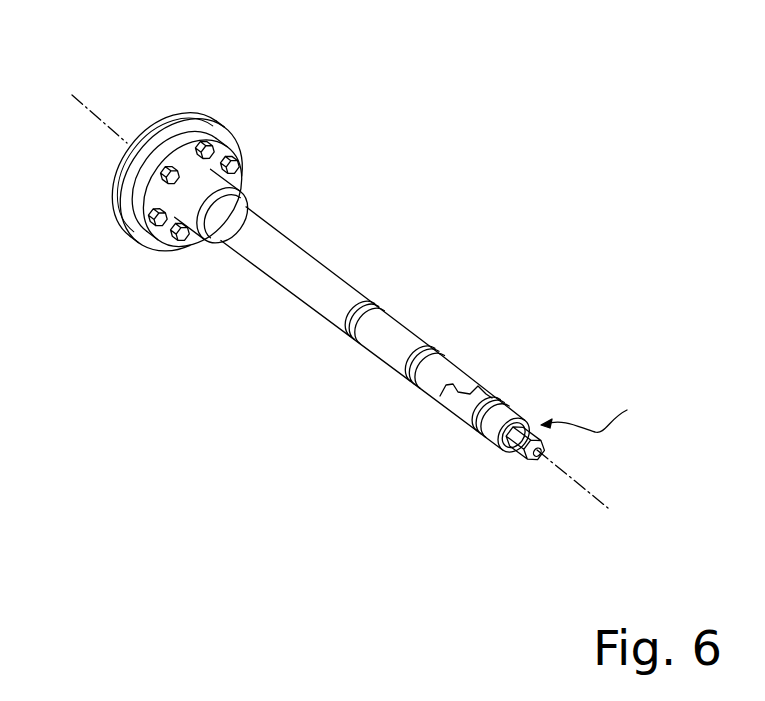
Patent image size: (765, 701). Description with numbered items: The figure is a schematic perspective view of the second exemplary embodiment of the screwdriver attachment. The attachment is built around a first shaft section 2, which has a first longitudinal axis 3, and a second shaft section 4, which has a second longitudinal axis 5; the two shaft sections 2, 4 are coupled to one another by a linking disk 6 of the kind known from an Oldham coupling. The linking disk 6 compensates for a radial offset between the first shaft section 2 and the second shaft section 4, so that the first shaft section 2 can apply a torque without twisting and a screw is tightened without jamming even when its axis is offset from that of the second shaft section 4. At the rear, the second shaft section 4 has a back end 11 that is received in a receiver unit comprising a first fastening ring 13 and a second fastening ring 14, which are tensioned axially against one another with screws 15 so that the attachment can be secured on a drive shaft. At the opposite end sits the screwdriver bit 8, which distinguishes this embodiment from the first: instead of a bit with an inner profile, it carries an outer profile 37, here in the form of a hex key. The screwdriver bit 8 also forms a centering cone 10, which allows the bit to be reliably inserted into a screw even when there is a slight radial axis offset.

The first shaft section 2 is at (470, 422).
The first longitudinal axis 3 is at (590, 486).
The second shaft section 4 is at (337, 280).
The second longitudinal axis 5 is at (103, 123).
The linking disk 6 is at (475, 388).
The screwdriver bit 8 is at (595, 410).
The centering cone 10 is at (523, 455).
The back end 11 is at (240, 153).
The first fastening ring 13 is at (130, 148).
The second fastening ring 14 is at (207, 185).
The screws 15 is at (232, 155).
The outer profile 37 is at (512, 452).